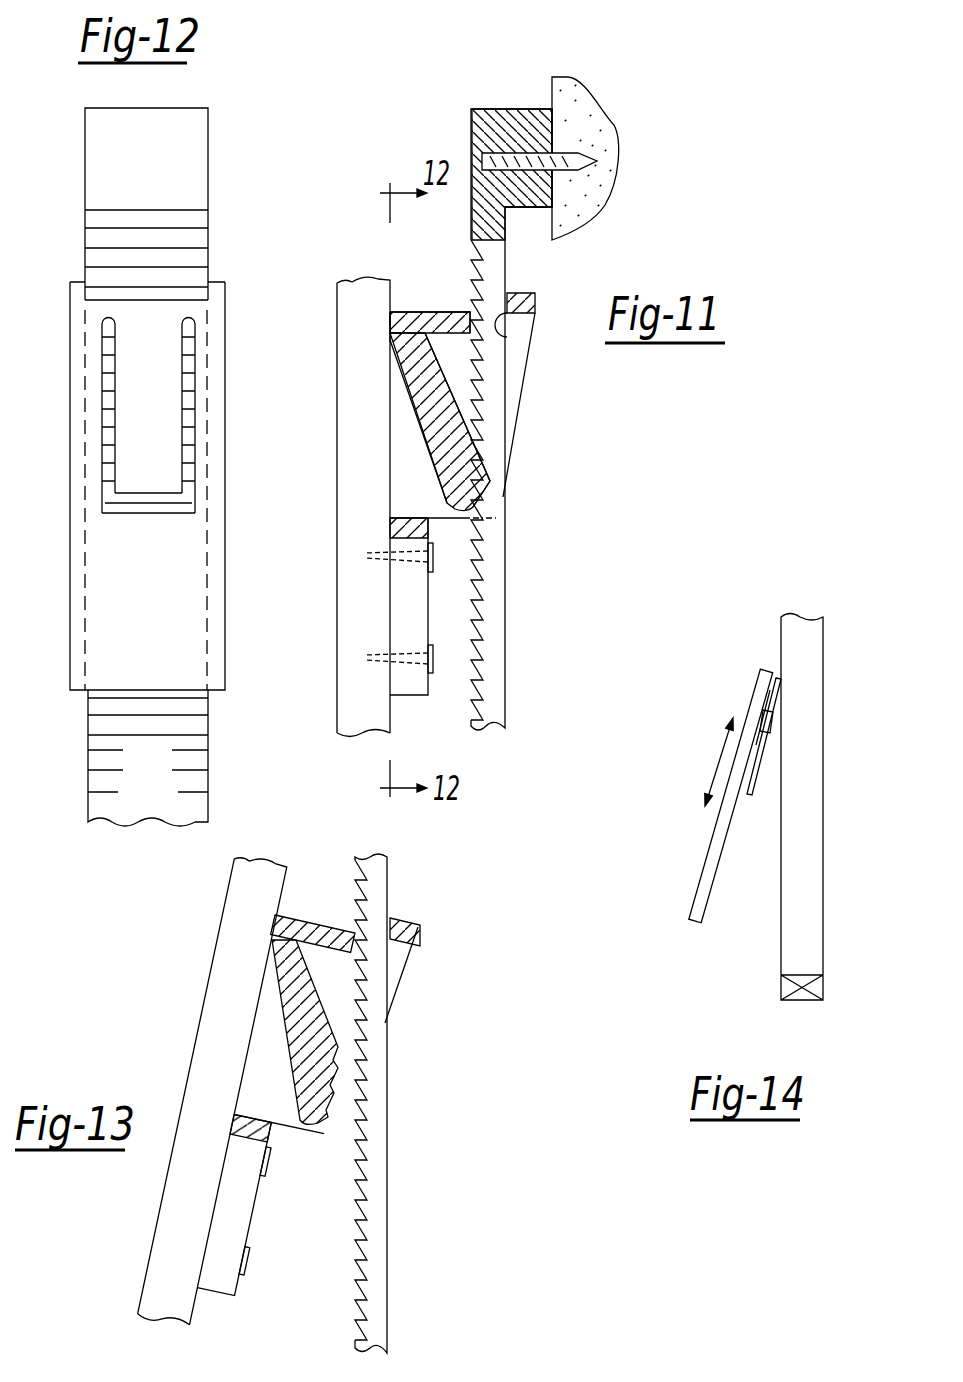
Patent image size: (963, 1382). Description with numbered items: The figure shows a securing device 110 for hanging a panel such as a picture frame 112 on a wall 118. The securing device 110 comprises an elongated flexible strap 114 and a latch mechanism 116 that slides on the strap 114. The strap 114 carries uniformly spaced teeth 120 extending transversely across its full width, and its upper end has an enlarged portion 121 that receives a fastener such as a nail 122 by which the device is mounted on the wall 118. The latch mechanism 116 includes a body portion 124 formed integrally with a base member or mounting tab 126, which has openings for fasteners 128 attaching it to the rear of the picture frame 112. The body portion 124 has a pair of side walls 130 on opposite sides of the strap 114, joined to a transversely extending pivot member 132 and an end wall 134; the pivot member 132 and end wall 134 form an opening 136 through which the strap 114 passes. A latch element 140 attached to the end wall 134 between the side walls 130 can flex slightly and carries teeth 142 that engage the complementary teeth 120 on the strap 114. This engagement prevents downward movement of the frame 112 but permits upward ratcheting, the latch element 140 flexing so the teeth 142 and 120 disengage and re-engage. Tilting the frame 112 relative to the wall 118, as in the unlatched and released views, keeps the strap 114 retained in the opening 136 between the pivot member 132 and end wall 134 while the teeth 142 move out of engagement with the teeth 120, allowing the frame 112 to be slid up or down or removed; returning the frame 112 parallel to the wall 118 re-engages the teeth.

In FIG. 12, the securing device 110 is at (226, 266).
In FIG. 14, the securing device 110 is at (777, 717).
In FIG. 11, the picture frame 112 is at (352, 441).
In FIG. 13, the picture frame 112 is at (213, 983).
In FIG. 14, the picture frame 112 is at (763, 688).
In FIG. 12, the elongated flexible strap 114 is at (192, 726).
In FIG. 11, the elongated flexible strap 114 is at (496, 562).
In FIG. 13, the elongated flexible strap 114 is at (378, 1165).
In FIG. 11, the latch mechanism 116 is at (405, 312).
In FIG. 11, the wall 118 is at (600, 183).
In FIG. 14, the wall 118 is at (808, 827).
In FIG. 12, the teeth 120 is at (198, 792).
In FIG. 11, the teeth 120 is at (478, 607).
In FIG. 13, the teeth 120 is at (357, 1187).
In FIG. 11, the enlarged portion 121 is at (537, 206).
In FIG. 11, the nail 122 is at (570, 150).
In FIG. 11, the body portion 124 is at (390, 322).
In FIG. 11, the mounting tab 126 is at (403, 593).
In FIG. 11, the fasteners 128 is at (433, 572).
In FIG. 12, the side walls 130 is at (73, 366).
In FIG. 11, the pivot member 132 is at (533, 300).
In FIG. 11, the end wall 134 is at (451, 266).
In FIG. 11, the opening 136 is at (507, 337).
In FIG. 12, the latch element 140 is at (132, 418).
In FIG. 11, the latch element 140 is at (455, 426).
In FIG. 11, the teeth 142 is at (492, 480).
In FIG. 13, the teeth 142 is at (323, 1117).